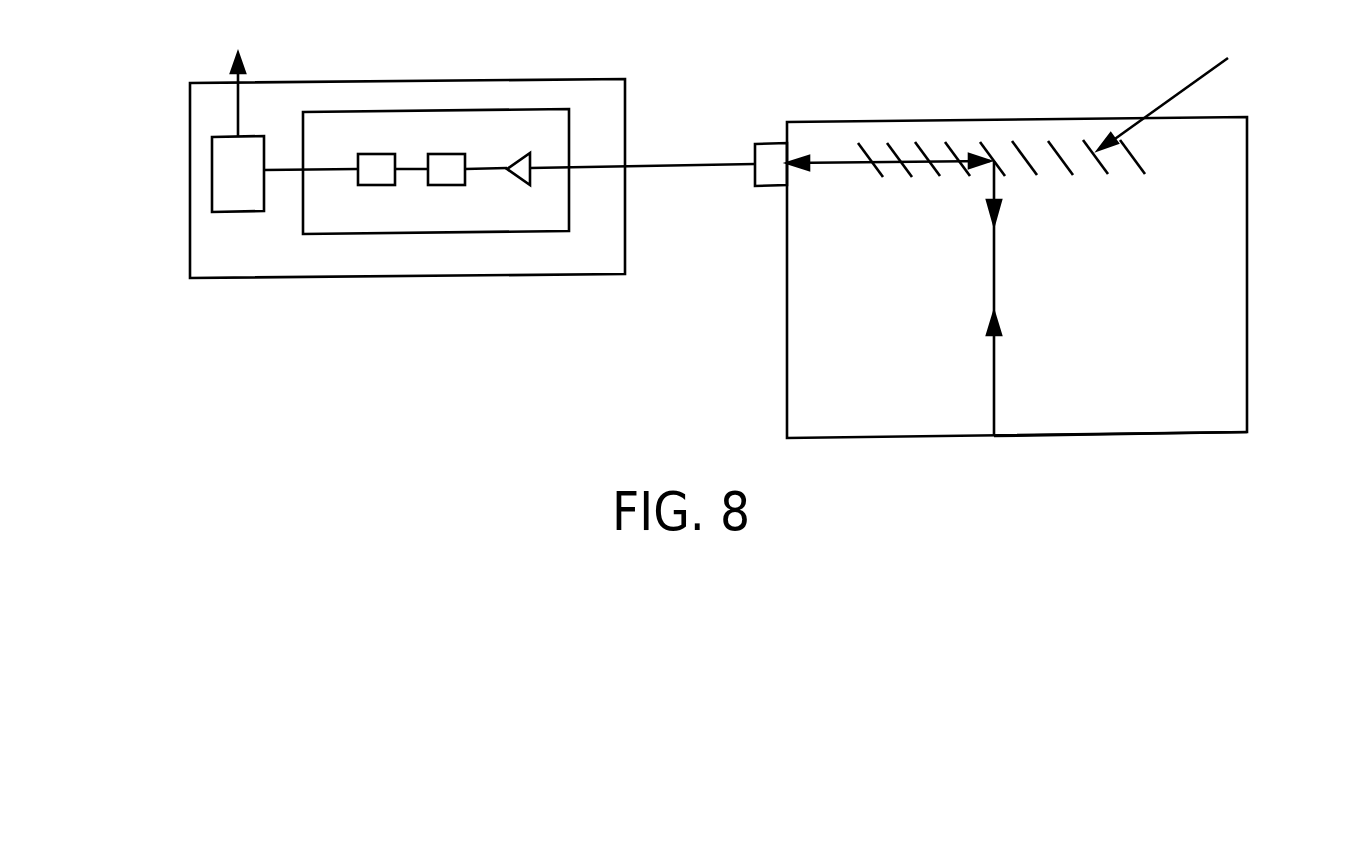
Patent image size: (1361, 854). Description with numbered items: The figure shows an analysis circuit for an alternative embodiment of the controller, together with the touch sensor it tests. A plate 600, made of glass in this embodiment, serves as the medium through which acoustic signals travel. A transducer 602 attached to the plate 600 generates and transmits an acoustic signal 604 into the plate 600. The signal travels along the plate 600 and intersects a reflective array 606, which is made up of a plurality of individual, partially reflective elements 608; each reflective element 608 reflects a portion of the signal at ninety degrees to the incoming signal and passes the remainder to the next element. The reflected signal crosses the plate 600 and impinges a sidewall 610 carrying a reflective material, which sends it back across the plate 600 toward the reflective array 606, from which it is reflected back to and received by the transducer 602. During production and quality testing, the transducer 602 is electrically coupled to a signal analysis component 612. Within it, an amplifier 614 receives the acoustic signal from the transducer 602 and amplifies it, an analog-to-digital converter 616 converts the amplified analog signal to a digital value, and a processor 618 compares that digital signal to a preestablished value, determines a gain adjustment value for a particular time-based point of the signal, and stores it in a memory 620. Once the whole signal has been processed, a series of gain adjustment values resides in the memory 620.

The plate 600 is at (1247, 385).
The transducer 602 is at (762, 143).
The acoustic signal 604 is at (995, 247).
The reflective array 606 is at (1055, 152).
The reflective element 608 is at (1190, 89).
The sidewall 610 is at (1077, 436).
The signal analysis component 612 is at (190, 212).
The amplifier 614 is at (517, 177).
The analog-to-digital converter 616 is at (448, 185).
The processor 618 is at (380, 185).
The memory 620 is at (238, 212).